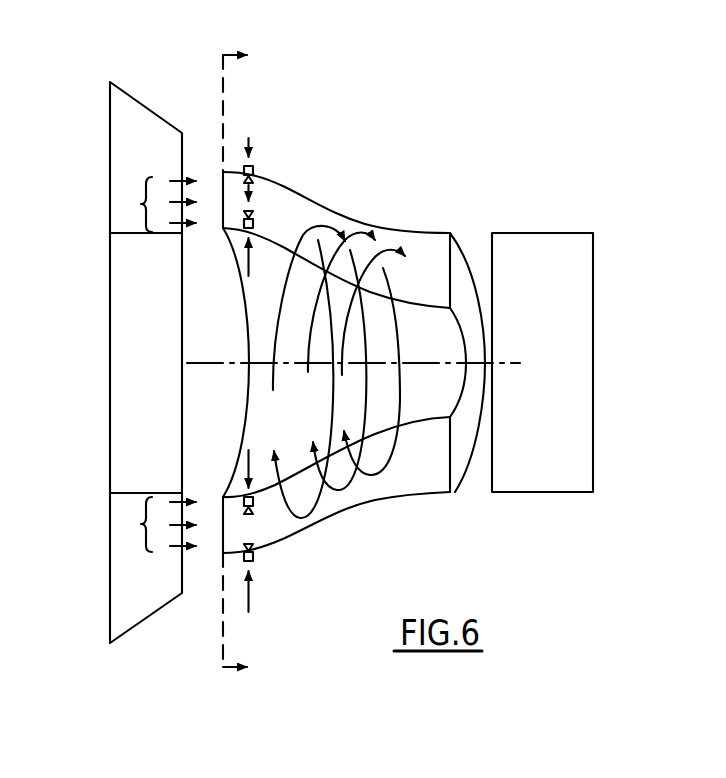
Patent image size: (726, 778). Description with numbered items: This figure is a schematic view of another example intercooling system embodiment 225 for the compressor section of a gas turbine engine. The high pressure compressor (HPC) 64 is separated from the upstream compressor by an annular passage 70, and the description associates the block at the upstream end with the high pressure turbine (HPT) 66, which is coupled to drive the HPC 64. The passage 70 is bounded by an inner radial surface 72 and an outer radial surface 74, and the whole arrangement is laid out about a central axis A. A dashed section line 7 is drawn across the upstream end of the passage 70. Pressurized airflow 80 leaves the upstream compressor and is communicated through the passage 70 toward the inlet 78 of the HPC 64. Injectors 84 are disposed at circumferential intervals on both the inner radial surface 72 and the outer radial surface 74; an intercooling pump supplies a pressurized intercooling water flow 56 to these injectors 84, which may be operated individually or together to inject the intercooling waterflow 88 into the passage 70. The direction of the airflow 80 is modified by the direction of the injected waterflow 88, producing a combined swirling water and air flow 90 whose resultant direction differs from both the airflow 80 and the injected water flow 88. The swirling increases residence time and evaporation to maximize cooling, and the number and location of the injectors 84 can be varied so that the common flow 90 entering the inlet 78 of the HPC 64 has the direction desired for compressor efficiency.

The high pressure turbine 66 is at (121, 114).
The high pressure compressor 64 is at (540, 247).
The pressurized airflow 80 is at (141, 204).
The section line 7- 7 is at (248, 362).
The engine central axis A is at (240, 366).
The annular passage 70 is at (336, 204).
The inner radial surface 72 is at (377, 287).
The outer radial surface 74 is at (413, 238).
The inlet 78 is at (458, 477).
The combined water and air flow 90 is at (378, 228).
The injected intercooling waterflow 88 is at (261, 196).
The injectors 84 is at (246, 166).
The pressurized intercooling water flow 56 is at (254, 145).
The intercooling system embodiment 225 is at (587, 144).